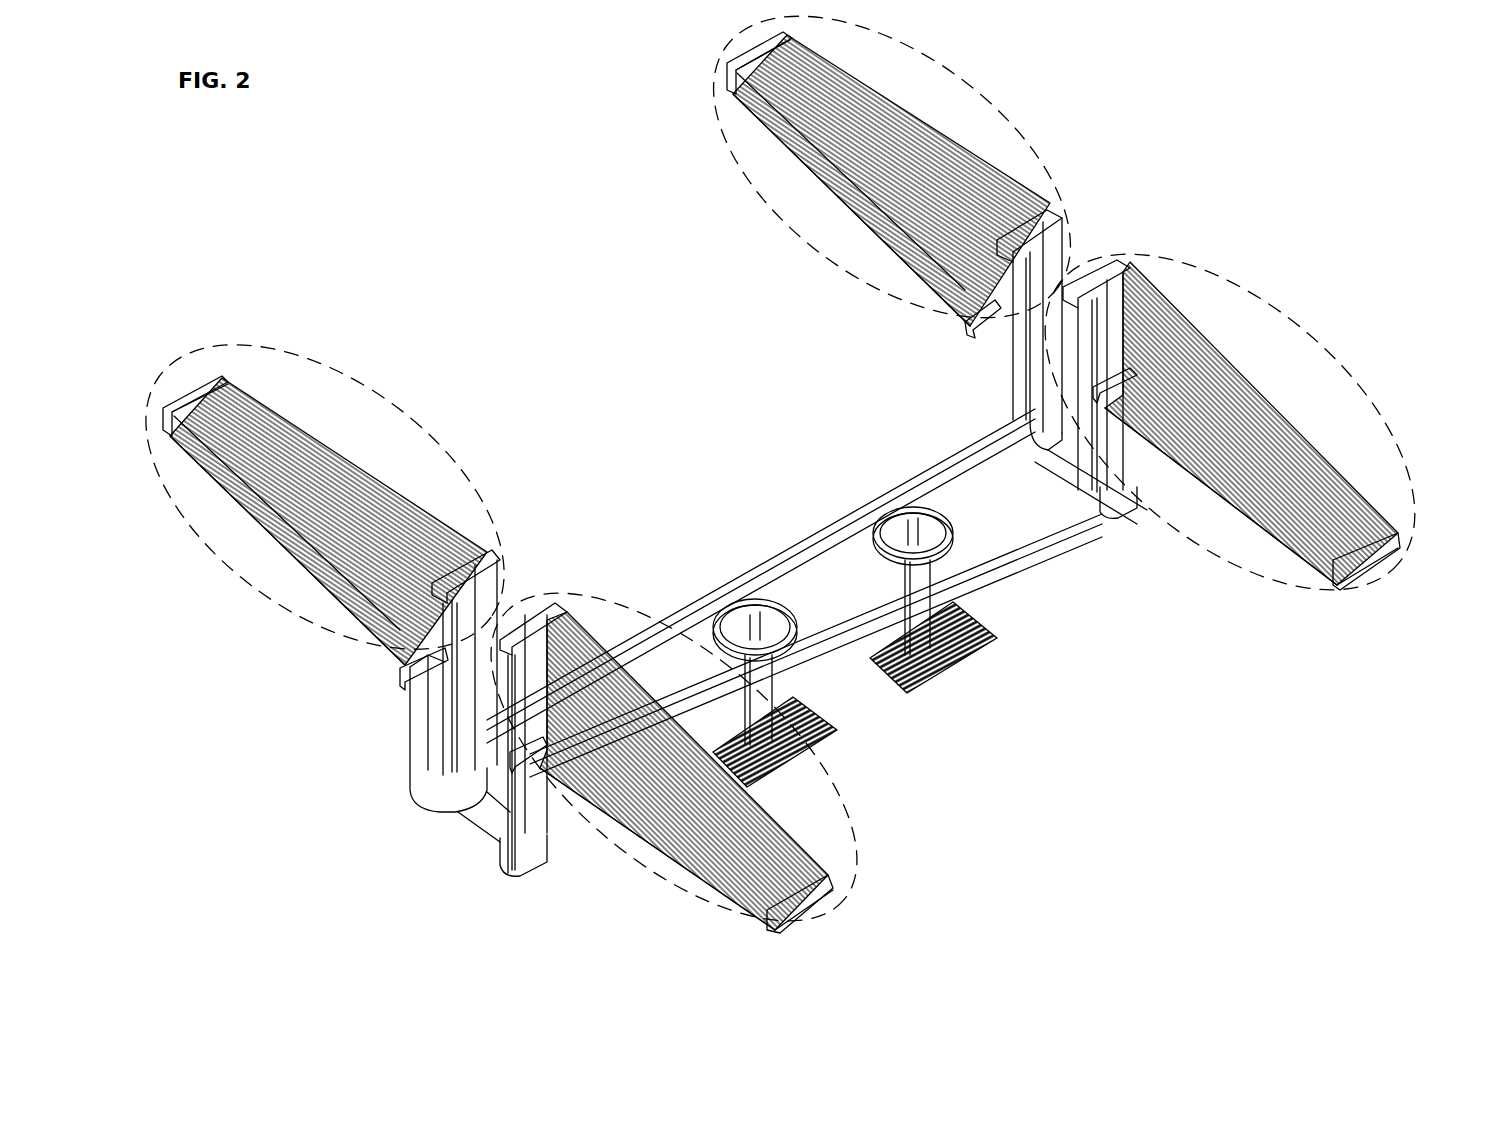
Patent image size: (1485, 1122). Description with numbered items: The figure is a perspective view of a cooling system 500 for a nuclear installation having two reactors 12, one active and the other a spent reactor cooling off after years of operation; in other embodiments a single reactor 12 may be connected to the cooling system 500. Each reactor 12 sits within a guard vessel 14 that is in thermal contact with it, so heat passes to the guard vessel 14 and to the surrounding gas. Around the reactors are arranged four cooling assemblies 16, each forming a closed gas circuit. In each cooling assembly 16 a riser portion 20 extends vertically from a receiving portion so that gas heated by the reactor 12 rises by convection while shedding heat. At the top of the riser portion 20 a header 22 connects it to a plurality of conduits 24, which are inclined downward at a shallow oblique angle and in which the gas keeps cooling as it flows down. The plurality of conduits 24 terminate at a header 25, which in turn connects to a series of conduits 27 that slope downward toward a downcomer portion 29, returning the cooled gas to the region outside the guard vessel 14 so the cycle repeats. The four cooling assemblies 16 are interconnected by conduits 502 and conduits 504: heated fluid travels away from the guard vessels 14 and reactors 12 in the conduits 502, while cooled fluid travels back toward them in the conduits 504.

The cooling system 500 is at (392, 160).
The reactor 12 is at (757, 620).
The guard vessel 14 is at (735, 610).
The cooling assembly 16 is at (1020, 125).
The riser portion 20 is at (1095, 375).
The header 22 is at (1045, 210).
The plurality of conduits 24 is at (930, 148).
The header 25 is at (728, 68).
The series of conduits 27 is at (850, 200).
The downcomer portion 29 is at (1010, 355).
The conduits 502 is at (745, 585).
The conduits 504 is at (975, 475).